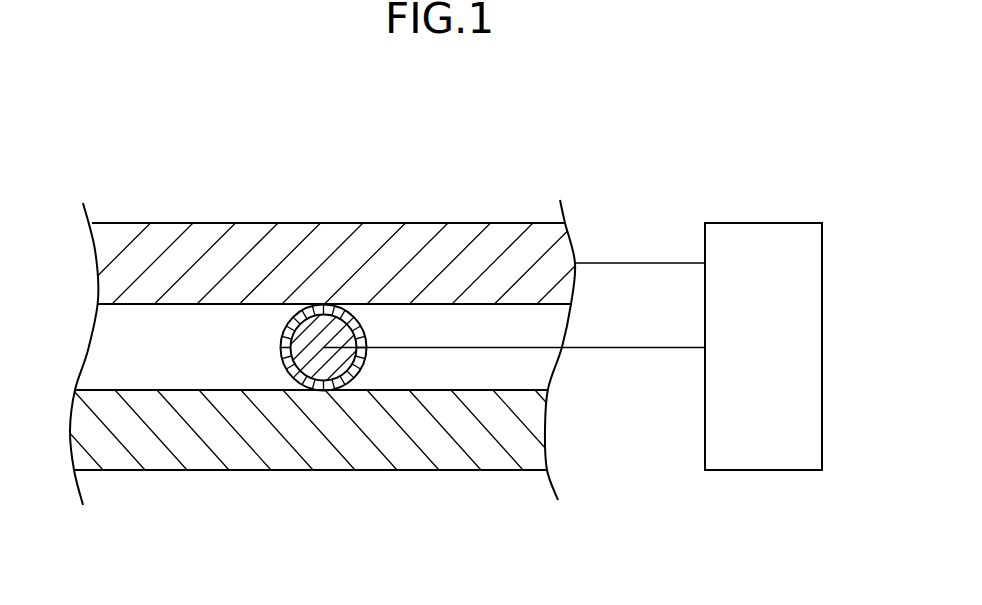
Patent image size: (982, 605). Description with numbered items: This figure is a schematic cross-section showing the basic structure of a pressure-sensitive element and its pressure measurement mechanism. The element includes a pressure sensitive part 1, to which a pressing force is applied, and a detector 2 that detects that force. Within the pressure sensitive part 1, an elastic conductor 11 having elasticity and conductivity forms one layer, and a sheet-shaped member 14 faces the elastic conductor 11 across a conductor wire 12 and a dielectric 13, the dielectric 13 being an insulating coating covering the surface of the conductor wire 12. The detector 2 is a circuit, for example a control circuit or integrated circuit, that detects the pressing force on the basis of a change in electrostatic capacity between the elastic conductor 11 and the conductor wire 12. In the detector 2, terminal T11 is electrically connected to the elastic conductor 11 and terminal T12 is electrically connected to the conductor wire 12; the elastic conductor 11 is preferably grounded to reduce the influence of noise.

The pressure sensitive part 1 is at (138, 166).
The detector 2 is at (590, 284).
The elastic conductor 11 is at (345, 223).
The conductor wire 12 is at (286, 366).
The dielectric 13 is at (362, 368).
The sheet-shaped member 14 is at (148, 472).
The terminal T11 is at (673, 265).
The terminal T12 is at (547, 349).